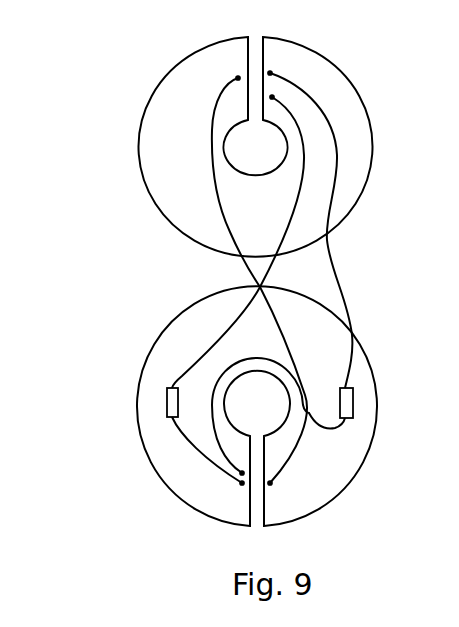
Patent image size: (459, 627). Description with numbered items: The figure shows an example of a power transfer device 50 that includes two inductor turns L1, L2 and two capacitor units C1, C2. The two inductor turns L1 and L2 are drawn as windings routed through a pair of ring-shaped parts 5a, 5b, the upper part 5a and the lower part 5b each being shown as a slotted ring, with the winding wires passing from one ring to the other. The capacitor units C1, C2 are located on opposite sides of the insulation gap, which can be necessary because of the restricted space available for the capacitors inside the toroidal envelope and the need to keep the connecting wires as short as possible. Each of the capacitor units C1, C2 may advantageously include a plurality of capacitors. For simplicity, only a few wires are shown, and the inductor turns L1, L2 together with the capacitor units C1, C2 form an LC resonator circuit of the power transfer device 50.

The power transfer device 50 is at (232, 285).
The first ring core 5a is at (163, 173).
The second ring core 5b is at (165, 355).
The inductor turn L1 is at (357, 183).
The inductor turn L2 is at (328, 468).
The capacitor unit C1 is at (167, 402).
The capacitor unit C2 is at (353, 400).